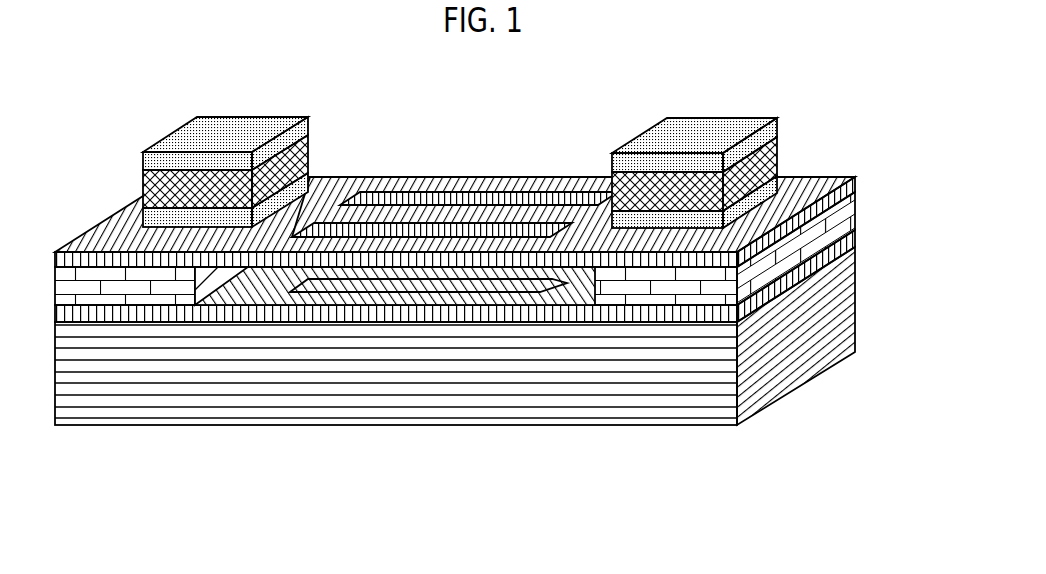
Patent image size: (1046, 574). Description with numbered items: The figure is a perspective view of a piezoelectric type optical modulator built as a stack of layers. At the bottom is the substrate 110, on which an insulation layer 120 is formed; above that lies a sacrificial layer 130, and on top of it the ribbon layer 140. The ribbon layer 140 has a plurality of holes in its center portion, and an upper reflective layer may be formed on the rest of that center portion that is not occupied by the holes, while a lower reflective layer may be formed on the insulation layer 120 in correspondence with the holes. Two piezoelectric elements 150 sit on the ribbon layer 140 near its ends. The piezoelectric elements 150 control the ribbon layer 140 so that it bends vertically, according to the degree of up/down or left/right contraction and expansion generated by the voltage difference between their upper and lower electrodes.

The substrate 110 is at (850, 313).
The insulation layer 120 is at (852, 243).
The sacrificial layer 130 is at (857, 213).
The ribbon layer 140 is at (857, 182).
The piezoelectric element 150 is at (780, 127).